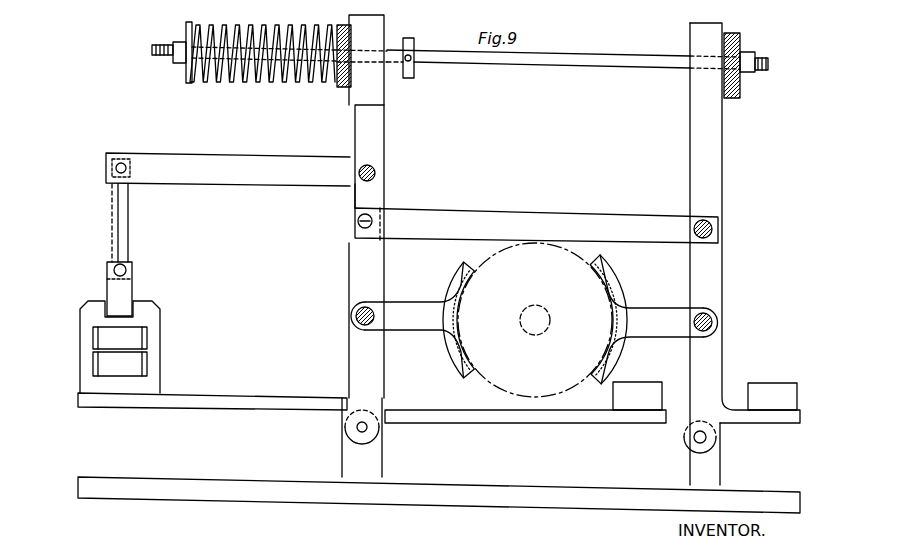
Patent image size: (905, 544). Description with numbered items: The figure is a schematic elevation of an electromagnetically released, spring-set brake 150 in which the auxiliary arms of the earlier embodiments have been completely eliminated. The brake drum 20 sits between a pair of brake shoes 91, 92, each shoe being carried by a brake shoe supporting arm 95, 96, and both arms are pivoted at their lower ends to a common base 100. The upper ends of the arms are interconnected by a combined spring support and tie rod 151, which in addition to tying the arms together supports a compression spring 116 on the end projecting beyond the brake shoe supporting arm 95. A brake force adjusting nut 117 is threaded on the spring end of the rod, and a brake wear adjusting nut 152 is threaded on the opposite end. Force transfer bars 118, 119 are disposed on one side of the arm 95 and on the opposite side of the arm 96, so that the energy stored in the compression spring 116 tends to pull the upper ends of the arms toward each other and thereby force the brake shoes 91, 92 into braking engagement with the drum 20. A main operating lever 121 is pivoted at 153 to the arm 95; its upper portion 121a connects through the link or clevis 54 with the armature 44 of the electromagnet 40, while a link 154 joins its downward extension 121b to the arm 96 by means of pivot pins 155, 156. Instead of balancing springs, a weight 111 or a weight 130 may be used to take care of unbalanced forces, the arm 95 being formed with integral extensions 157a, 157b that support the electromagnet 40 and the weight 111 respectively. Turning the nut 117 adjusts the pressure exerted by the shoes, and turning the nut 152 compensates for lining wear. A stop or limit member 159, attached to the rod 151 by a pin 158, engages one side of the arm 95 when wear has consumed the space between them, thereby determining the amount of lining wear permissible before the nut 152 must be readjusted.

The brake drum 20 is at (586, 258).
The electromagnet 40 is at (68, 340).
The armature 44 is at (115, 281).
The link or clevis 54 is at (120, 218).
The brake shoe 91 is at (466, 268).
The brake shoe 92 is at (606, 276).
The brake shoe supporting arm 95 is at (384, 97).
The brake shoe supporting arm 96 is at (722, 141).
The base 100 is at (298, 500).
The weight 111 is at (640, 388).
The compression spring 116 is at (212, 84).
The brake force adjusting nut 117 is at (168, 60).
The force transfer bar 118 is at (342, 88).
The force transfer bar 119 is at (740, 96).
The main operating lever 121 is at (250, 138).
The main operating lever portion 121a is at (372, 115).
The downward extension of the main operating lever 121b is at (372, 197).
The weight 130 is at (768, 390).
The brake 150 is at (442, 532).
The combined spring support and tie rod 151 is at (552, 62).
The brake wear adjusting nut 152 is at (748, 54).
The pivot 153 is at (376, 173).
The link 154 is at (496, 210).
The pivot pin 155 is at (358, 221).
The pivot pin 156 is at (712, 229).
The integral extension 157a is at (290, 394).
The integral extension 157b is at (466, 414).
The pin 158 is at (416, 64).
The stop or limit member 159 is at (408, 38).